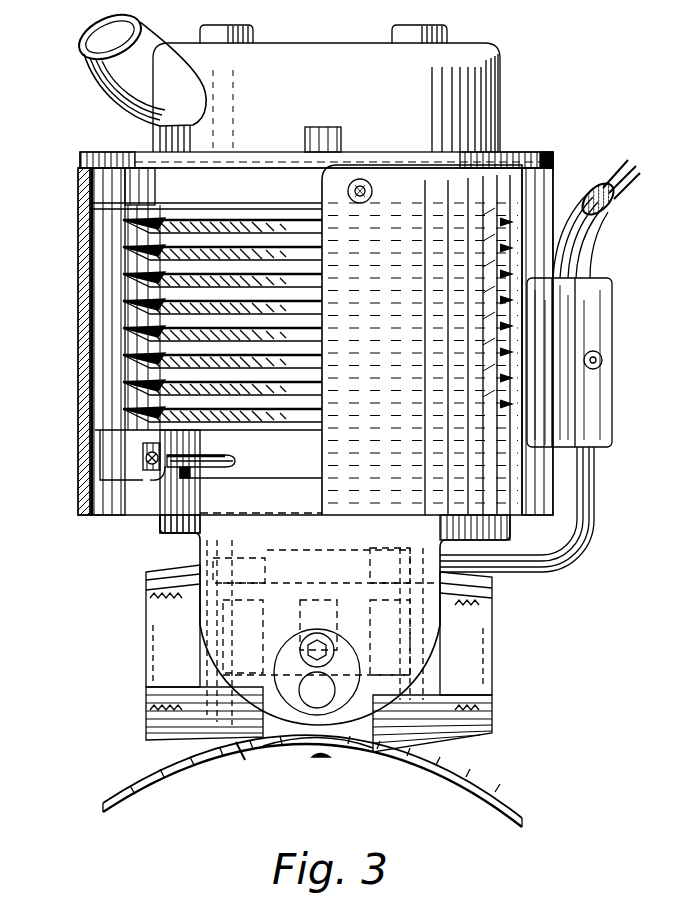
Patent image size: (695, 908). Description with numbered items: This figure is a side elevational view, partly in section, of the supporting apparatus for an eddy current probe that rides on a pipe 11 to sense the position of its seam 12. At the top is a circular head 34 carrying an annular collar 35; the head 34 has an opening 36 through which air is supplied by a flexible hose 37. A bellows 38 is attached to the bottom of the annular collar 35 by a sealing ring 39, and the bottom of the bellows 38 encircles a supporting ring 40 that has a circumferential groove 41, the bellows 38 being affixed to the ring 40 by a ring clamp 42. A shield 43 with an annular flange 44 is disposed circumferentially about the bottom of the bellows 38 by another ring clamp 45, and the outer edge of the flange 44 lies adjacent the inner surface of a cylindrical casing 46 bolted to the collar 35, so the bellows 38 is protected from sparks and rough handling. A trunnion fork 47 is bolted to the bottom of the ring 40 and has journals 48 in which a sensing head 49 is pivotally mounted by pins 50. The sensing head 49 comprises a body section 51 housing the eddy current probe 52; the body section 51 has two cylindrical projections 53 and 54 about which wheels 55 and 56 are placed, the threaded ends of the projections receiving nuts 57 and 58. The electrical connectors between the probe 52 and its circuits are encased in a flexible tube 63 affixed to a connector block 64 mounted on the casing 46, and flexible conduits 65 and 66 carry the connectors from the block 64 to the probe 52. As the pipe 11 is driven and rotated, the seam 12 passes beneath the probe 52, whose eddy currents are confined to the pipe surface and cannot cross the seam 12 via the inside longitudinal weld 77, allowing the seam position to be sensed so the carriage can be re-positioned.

The pipe 11 is at (490, 788).
The seam 12 is at (305, 756).
The circular head 34 is at (500, 90).
The annular collar 35 is at (532, 152).
The opening 36 is at (200, 108).
The flexible hose 37 is at (117, 101).
The bellows 38 is at (272, 220).
The sealing ring 39 is at (235, 204).
The supporting ring 40 is at (236, 477).
The circumferential groove 41 is at (232, 452).
The ring clamp 42 is at (147, 462).
The shield 43 is at (155, 476).
The annular flange 44 is at (103, 438).
The ring clamp 45 is at (148, 456).
The cylindrical casing 46 is at (78, 222).
The trunnion fork 47 is at (437, 641).
The journals 48 is at (300, 684).
The sensing head 49 is at (130, 708).
The pins 50 is at (326, 698).
The body section 51 is at (310, 545).
The eddy current probe 52 is at (285, 581).
The cylindrical projection 53 is at (232, 560).
The cylindrical projection 54 is at (383, 552).
The wheel 55 is at (242, 752).
The wheel 56 is at (385, 755).
The nut 57 is at (150, 591).
The nut 58 is at (490, 619).
The flexible tube 63 is at (592, 252).
The connector block 64 is at (612, 320).
The flexible conduit 65 is at (590, 526).
The flexible conduit 66 is at (556, 536).
The inside longitudinal weld 77 is at (323, 760).